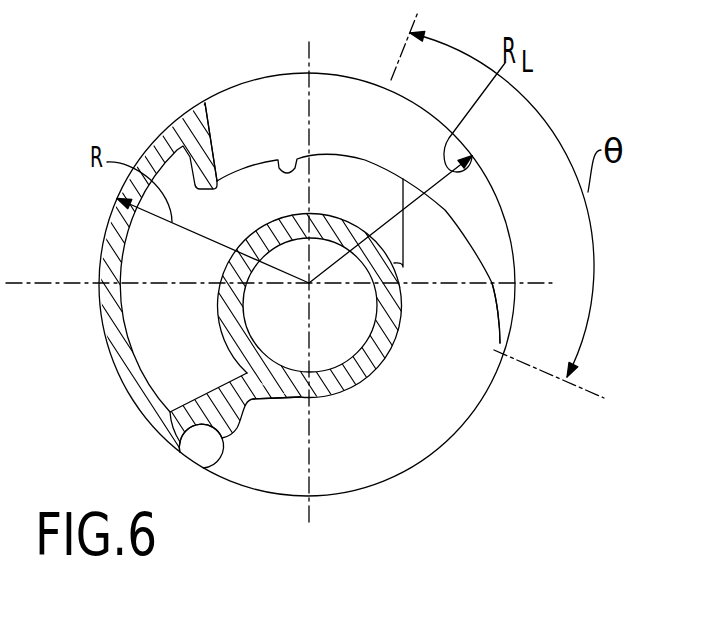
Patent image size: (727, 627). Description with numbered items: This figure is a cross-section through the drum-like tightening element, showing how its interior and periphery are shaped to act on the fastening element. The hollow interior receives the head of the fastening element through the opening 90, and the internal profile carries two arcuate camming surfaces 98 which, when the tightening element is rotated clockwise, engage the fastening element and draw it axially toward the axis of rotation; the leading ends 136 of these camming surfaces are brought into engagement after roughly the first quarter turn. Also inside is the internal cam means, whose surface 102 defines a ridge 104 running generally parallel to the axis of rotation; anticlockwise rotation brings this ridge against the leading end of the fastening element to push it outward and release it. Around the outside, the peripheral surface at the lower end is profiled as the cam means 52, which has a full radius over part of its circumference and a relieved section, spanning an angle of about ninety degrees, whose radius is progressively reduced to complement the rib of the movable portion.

The cam means 52 is at (343, 74).
The opening 90 is at (351, 440).
The arcuate camming surfaces 98 is at (274, 160).
The internal cam means surface 102 is at (300, 397).
The ridge 104 is at (202, 463).
The leading ends of the camming surfaces 136 is at (500, 343).